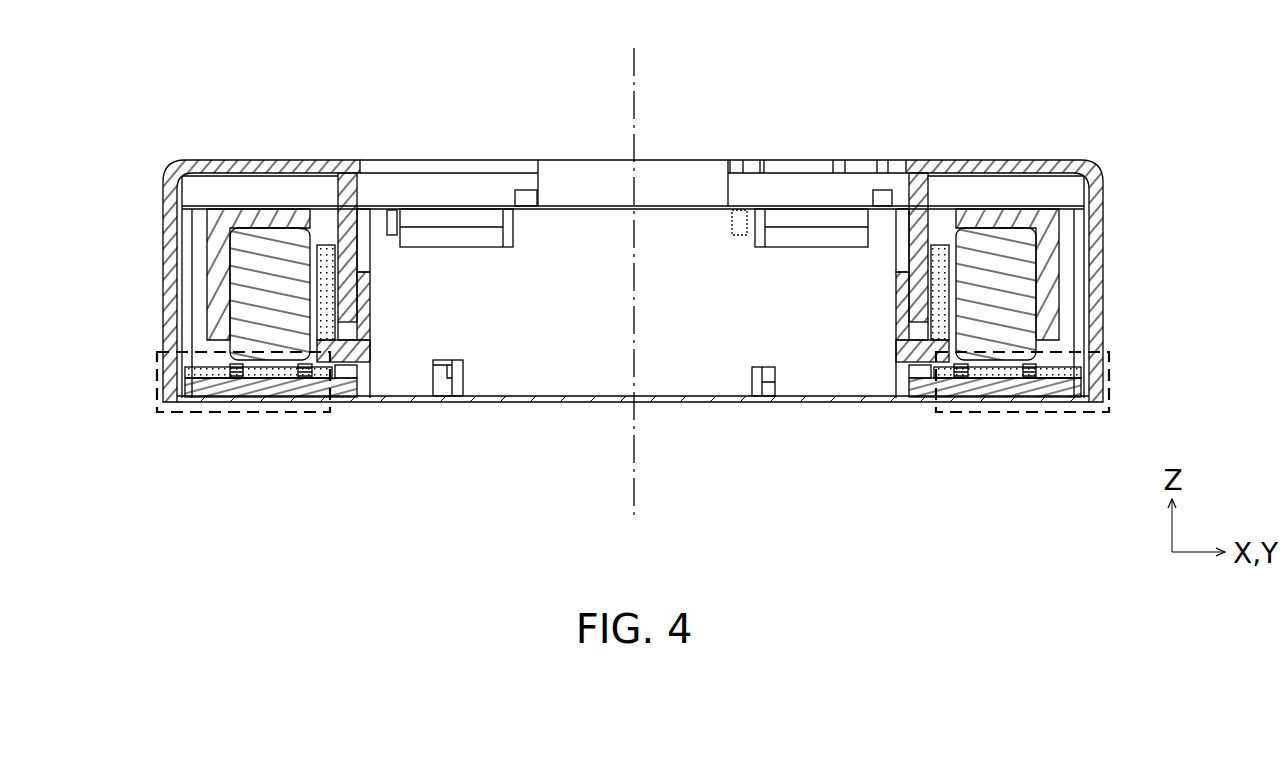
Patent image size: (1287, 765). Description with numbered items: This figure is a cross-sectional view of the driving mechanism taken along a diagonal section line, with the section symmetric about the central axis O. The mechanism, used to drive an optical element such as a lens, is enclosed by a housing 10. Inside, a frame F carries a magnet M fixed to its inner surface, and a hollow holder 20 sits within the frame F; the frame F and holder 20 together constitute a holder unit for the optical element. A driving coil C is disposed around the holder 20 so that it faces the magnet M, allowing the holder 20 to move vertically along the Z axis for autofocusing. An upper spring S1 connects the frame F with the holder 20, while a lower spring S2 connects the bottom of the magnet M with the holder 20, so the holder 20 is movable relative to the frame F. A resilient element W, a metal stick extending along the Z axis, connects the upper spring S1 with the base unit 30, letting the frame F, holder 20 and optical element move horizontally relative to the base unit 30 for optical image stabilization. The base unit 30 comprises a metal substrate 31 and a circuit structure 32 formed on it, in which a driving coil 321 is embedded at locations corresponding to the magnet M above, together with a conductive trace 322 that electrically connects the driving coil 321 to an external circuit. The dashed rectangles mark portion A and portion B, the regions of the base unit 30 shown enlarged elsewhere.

The housing 10 is at (955, 158).
The central axis O is at (636, 66).
The upper spring S1 is at (255, 204).
The frame F is at (217, 218).
The magnet M is at (250, 255).
The resilient element W is at (190, 288).
The driving coil C is at (300, 318).
The base unit 30 is at (634, 403).
The circuit structure 32 is at (200, 370).
The metal substrate 31 is at (200, 388).
The driving coil 321 is at (302, 380).
The conductive trace 322 is at (232, 381).
The lower spring S2 is at (348, 380).
The holder 20 is at (372, 368).
The portion A is at (160, 414).
The portion B is at (1105, 414).